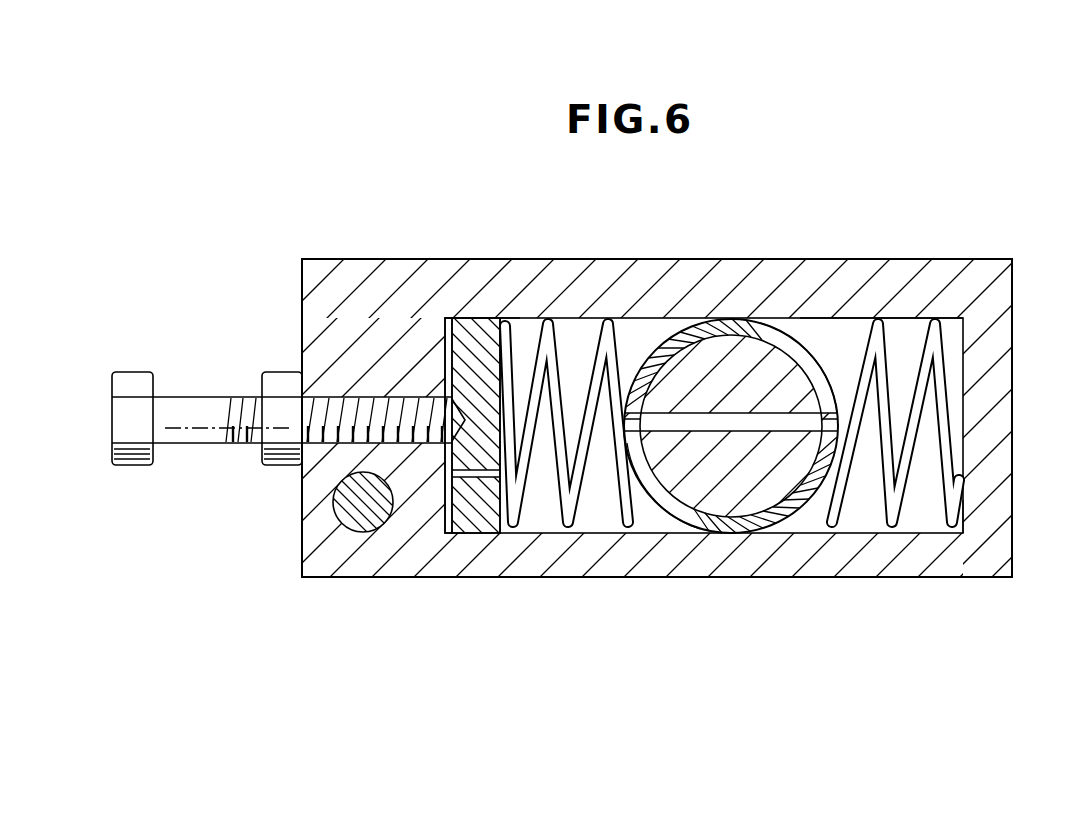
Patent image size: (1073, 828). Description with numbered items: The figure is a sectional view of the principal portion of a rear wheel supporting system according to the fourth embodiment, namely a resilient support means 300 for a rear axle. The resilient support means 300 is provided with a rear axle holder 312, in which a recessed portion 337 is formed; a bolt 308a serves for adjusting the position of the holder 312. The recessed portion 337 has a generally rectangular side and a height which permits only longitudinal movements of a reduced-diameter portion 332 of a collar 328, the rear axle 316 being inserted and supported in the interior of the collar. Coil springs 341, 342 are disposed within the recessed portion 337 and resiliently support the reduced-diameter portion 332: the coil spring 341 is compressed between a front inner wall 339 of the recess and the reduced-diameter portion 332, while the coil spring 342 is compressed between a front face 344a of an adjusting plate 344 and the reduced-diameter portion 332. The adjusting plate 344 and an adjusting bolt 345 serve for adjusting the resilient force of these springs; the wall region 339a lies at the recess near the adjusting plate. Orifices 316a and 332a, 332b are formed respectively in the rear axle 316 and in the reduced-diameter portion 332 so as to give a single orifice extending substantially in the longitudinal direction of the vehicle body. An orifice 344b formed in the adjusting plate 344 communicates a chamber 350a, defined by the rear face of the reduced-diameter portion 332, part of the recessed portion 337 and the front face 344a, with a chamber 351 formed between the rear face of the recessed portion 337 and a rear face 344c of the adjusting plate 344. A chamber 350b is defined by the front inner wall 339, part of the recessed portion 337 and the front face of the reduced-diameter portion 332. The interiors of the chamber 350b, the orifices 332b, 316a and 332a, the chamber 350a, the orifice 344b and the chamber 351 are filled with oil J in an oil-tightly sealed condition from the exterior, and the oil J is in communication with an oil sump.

The resilient support means 300 is at (536, 455).
The rear axle holder 312 is at (867, 279).
The rear axle 316 is at (749, 357).
The orifice 316a is at (706, 432).
The collar 328 is at (697, 330).
The reduced-diameter portion 332 is at (722, 479).
The orifice 332a is at (658, 512).
The orifice 332b is at (807, 513).
The recessed portion 337 is at (833, 328).
The front inner wall 339 is at (953, 357).
The chamber wall 339a is at (447, 333).
The coil spring 341 is at (850, 517).
The coil spring 342 is at (580, 523).
The adjusting plate 344 is at (477, 517).
The front face 344a is at (502, 367).
The orifice 344b is at (470, 480).
The rear face 344c is at (449, 372).
The adjusting bolt 345 is at (327, 403).
The chamber 350a is at (737, 421).
The chamber 350b is at (835, 358).
The chamber 351 is at (446, 385).
The bolt 308a is at (375, 517).
The oil J is at (927, 517).